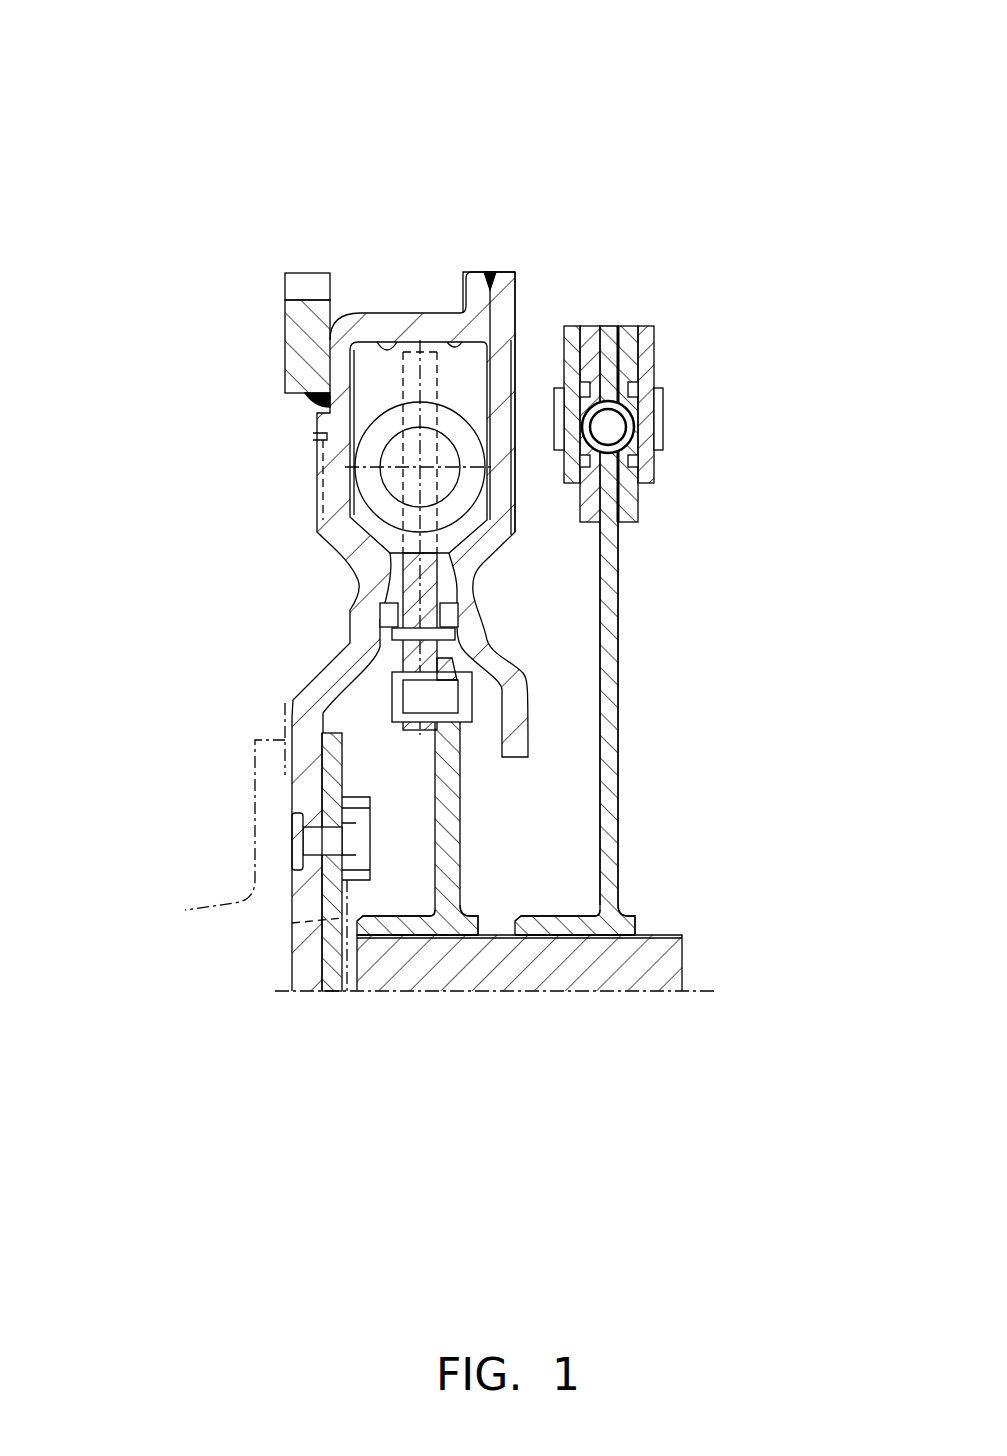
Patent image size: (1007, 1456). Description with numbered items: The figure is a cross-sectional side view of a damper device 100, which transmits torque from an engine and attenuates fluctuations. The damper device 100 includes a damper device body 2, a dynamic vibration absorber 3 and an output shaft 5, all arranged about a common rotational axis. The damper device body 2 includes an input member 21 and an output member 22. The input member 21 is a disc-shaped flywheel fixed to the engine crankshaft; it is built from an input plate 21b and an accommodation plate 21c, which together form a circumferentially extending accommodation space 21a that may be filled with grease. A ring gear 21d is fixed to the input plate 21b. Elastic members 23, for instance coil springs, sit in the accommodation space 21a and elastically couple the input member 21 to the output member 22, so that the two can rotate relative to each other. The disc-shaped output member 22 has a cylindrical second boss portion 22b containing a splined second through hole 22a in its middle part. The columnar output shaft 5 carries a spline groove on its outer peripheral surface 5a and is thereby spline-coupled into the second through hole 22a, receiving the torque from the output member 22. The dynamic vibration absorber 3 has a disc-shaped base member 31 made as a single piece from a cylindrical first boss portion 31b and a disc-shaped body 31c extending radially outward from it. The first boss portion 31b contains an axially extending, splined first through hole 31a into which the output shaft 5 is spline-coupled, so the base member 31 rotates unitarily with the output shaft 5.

The damper device 100 is at (458, 148).
The damper device body 2 is at (393, 280).
The input member 21 is at (318, 472).
The accommodation space 21a is at (368, 350).
The input plate 21b is at (437, 312).
The accommodation plate 21c is at (518, 340).
The ring gear 21d is at (285, 370).
The elastic members 23 is at (371, 500).
The output member 22 is at (460, 810).
The second through hole 22a is at (440, 940).
The second boss portion 22b is at (398, 912).
The dynamic vibration absorber 3 is at (668, 325).
The base member 31 is at (620, 718).
The first through hole 31a is at (585, 935).
The first boss portion 31b is at (555, 915).
The body 31c is at (612, 650).
The output shaft 5 is at (518, 995).
The outer peripheral surface 5a is at (503, 918).